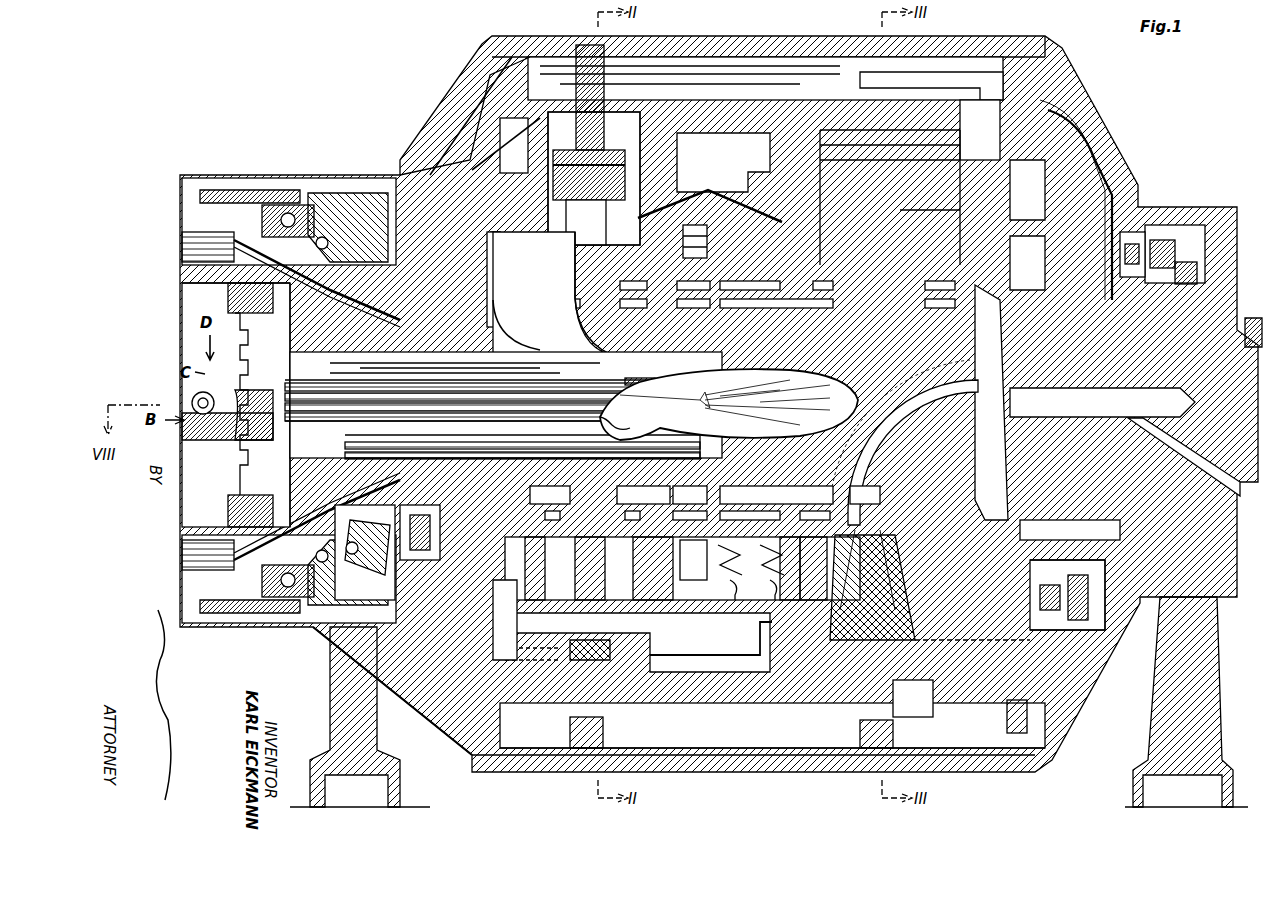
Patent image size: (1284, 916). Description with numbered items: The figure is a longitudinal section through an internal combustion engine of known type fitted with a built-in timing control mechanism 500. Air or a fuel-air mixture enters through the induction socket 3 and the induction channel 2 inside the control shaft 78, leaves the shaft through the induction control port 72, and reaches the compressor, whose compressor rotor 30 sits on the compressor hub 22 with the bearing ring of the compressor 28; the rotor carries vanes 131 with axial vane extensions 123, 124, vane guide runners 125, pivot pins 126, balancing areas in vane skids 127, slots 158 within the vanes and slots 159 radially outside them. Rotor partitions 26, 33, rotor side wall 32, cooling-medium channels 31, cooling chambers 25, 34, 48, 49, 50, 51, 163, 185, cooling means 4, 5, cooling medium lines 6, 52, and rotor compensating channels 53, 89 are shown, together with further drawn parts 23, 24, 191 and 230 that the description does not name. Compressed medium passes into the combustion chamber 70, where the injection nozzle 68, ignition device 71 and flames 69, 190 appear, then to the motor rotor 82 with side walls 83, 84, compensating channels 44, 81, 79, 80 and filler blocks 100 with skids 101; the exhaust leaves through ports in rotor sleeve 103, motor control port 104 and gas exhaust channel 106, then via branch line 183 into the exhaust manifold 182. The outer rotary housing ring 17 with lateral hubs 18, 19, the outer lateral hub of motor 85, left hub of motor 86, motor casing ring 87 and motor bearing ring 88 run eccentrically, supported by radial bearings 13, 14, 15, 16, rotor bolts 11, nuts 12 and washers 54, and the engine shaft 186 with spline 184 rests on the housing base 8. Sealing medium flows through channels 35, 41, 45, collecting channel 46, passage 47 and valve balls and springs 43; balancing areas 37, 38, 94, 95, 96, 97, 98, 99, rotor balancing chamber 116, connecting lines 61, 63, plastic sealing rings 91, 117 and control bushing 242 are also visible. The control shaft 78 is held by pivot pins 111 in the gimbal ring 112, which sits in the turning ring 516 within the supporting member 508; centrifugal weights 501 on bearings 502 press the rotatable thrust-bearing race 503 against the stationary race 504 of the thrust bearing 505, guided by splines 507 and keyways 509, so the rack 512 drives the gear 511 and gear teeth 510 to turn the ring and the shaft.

The induction channel 2 is at (322, 348).
The induction socket 3 is at (355, 452).
The cooling means 4 is at (185, 555).
The cooling means 5 is at (182, 247).
The cooling medium line 6 is at (452, 455).
The housing base 8 is at (1200, 640).
The rotor bolts 11 is at (1066, 176).
The nuts of rotor bolts 12 is at (1080, 610).
The radial bearing 13 is at (395, 525).
The radial bearing 14 is at (440, 545).
The radial bearing 15 is at (1124, 230).
The radial bearing 16 is at (1180, 255).
The outer rotary housing ring 17 is at (748, 760).
The lateral hub 18 is at (430, 672).
The lateral hub 19 is at (1050, 68).
The compressor hub 22 is at (488, 100).
The seal 23 is at (490, 580).
The rotor body 24 is at (868, 262).
The cooling chambers 25 is at (510, 155).
The rotor partition 26 is at (495, 567).
The bearing ring of the compressor 28 is at (572, 735).
The compressor rotor 30 is at (580, 633).
The cooling-medium channels in rotor 31 is at (580, 620).
The rotor side wall 32 is at (612, 710).
The rotor partition 33 is at (640, 561).
The cooling chamber 34 is at (668, 152).
The sealing-medium channel 35 is at (712, 640).
The balancing area 37 is at (560, 515).
The balancing area 38 is at (635, 515).
The sealing-medium channel 41 is at (735, 630).
The valve balls and springs 43 is at (675, 572).
The compensating channel for motor rotor 44 is at (790, 556).
The channel for sealing medium 45 is at (675, 550).
The collecting channel for sealing medium 46 is at (770, 288).
The passage for sealing medium 47 is at (758, 500).
The cooling chamber 48 is at (800, 308).
The cooling chamber 49 is at (975, 318).
The cooling chamber 50 is at (552, 308).
The cooling chamber 51 is at (636, 308).
The cooling medium line 52 is at (500, 245).
The rotor compensating channel in the compressor 53 is at (546, 690).
The washers 54 is at (1058, 575).
The connecting line to rotor balancing area 61 is at (1015, 240).
The connecting line 63 is at (726, 190).
The injection nozzle 68 is at (600, 430).
The flame 69 is at (630, 440).
The combustion chamber 70 is at (730, 432).
The ignition device 71 is at (655, 382).
The induction control port 72 is at (546, 342).
The control shaft of engine 78 is at (842, 430).
The compensating channel in motor 79 is at (795, 690).
The compensating channel in motor 80 is at (950, 700).
The compensating channel for motor rotor 81 is at (960, 590).
The motor rotor 82 is at (862, 215).
The side wall of motor rotor 83 is at (812, 128).
The side wall of motor rotor 84 is at (948, 140).
The outer lateral hub of motor 85 is at (1050, 108).
The left hub of motor 86 is at (695, 690).
The motor casing ring 87 is at (900, 718).
The motor bearing ring 88 is at (860, 733).
The rotor compensating channel in the compressor 89 is at (635, 690).
The plastic sealing ring 91 is at (1065, 640).
The balancing area 94 is at (852, 500).
The balancing area 95 is at (940, 520).
The balancing area 96 is at (930, 280).
The balancing area 97 is at (828, 288).
The balancing area 98 is at (630, 288).
The balancing area 99 is at (560, 292).
The filler blocks 100 is at (875, 600).
The skids of filler blocks 101 is at (905, 650).
The ports in rotor sleeve 103 is at (875, 530).
The motor control port 104 is at (870, 474).
The gas exhaust channel 106 is at (955, 405).
The pivot pins 111 is at (240, 325).
The gimbal ring 112 is at (230, 305).
The rotor balancing chamber 116 is at (1032, 160).
The plastic sealing ring 117 is at (1075, 650).
The axial vane extension 123 is at (532, 115).
The axial vane extension 124 is at (642, 160).
The vane guide runners 125 is at (588, 123).
The pivot pins 126 is at (562, 186).
The balancing areas in vane skids 127 is at (594, 97).
The vanes 131 is at (596, 211).
The slots of rotor within vanes 158 is at (530, 195).
The slots in rotor radially outside of vanes 159 is at (556, 120).
The cooling chamber 163 is at (740, 690).
The exhaust manifold 182 is at (1205, 270).
The branch line 183 is at (1160, 360).
The spline on engine shaft 184 is at (1255, 320).
The cooling chamber 185 is at (706, 250).
The engine shaft 186 is at (1072, 360).
The flame 190 is at (710, 398).
The spray 191 is at (772, 400).
The block 230 is at (1005, 700).
The control bushing 242 is at (878, 300).
The control mechanism 500 is at (228, 292).
The centrifugal weights 501 is at (374, 206).
The bearings 502 is at (340, 206).
The rotatable thrust-bearing race 503 is at (295, 205).
The stationary race 504 is at (270, 195).
The thrust bearing 505 is at (280, 612).
The splines 507 is at (220, 195).
The supporting member 508 is at (190, 218).
The keyways 509 is at (225, 612).
The gear teeth 510 is at (240, 370).
The gear 511 is at (192, 400).
The rack 512 is at (255, 400).
The turning ring 516 is at (228, 510).